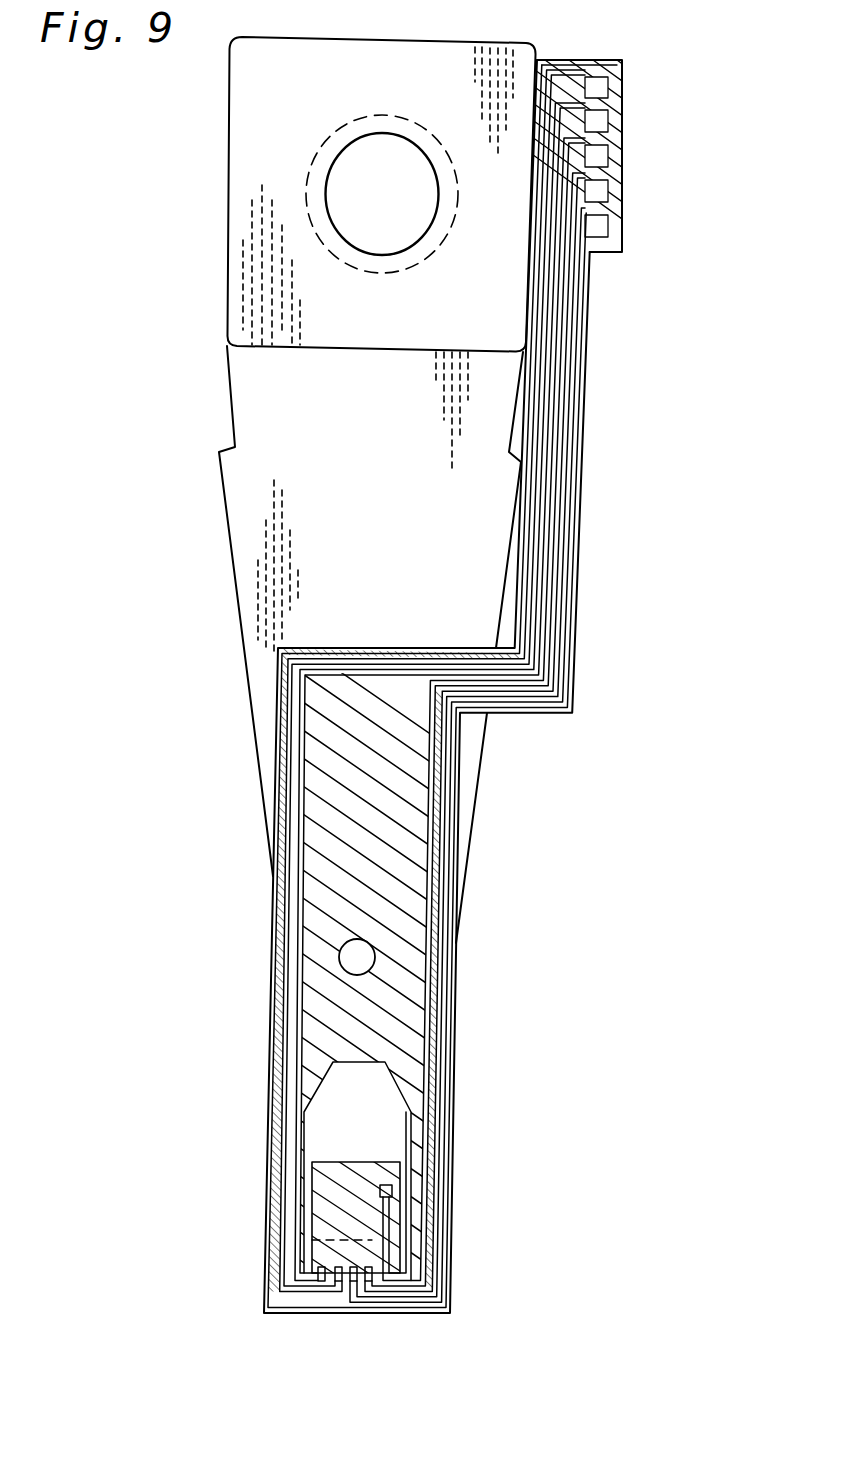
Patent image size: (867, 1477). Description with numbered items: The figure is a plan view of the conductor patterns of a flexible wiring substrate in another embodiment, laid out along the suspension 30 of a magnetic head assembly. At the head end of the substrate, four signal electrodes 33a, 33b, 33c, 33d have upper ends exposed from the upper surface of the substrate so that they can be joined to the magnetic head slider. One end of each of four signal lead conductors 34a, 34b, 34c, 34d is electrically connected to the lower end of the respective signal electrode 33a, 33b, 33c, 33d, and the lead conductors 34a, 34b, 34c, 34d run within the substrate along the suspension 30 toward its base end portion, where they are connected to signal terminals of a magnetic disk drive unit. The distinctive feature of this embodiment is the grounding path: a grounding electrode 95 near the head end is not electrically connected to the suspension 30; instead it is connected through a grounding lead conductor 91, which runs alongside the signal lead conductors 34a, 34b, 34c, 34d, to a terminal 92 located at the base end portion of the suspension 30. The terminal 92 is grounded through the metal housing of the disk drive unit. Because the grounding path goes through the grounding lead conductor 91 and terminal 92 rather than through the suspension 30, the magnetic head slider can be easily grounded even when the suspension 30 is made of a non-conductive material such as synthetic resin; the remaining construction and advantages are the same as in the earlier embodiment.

The suspension 30 is at (250, 410).
The terminal 92 is at (598, 157).
The grounding lead conductor 91 is at (425, 1040).
The signal lead conductor 34a is at (297, 1197).
The signal lead conductor 34b is at (282, 1151).
The signal lead conductor 34c is at (444, 1141).
The signal lead conductor 34d is at (436, 1084).
The signal electrode 33a is at (318, 1276).
The signal electrode 33b is at (338, 1283).
The signal electrode 33c is at (353, 1283).
The signal electrode 33d is at (372, 1284).
The grounding electrode 95 is at (393, 1190).